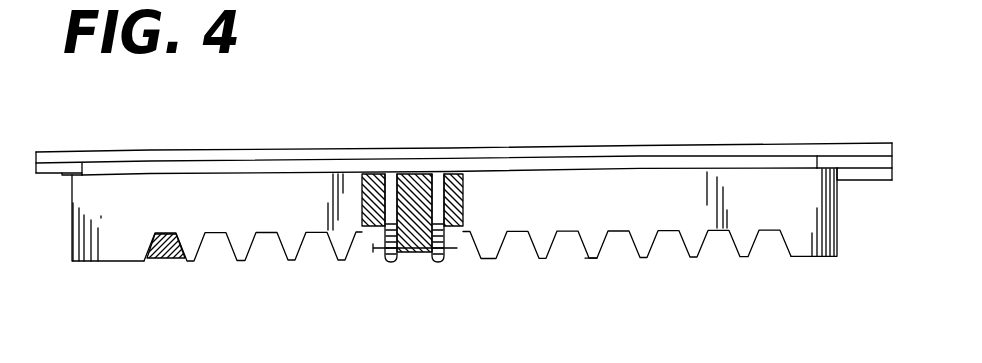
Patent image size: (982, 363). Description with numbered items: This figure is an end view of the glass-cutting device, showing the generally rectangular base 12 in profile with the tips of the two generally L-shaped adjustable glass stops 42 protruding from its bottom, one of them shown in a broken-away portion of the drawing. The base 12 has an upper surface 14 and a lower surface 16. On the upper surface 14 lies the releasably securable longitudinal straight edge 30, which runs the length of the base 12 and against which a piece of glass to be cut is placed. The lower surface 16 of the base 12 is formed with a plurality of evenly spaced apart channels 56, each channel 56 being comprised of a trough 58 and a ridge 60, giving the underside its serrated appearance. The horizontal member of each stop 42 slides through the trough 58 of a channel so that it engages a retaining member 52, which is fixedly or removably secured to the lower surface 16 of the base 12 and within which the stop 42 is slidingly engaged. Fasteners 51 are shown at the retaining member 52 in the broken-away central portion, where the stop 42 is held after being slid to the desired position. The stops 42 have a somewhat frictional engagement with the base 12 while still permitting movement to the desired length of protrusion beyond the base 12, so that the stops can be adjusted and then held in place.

The base 12 is at (800, 240).
The upper surface 14 is at (223, 172).
The lower surface 16 is at (102, 263).
The straight edge 30 is at (617, 102).
The stop 42 is at (163, 208).
The bolt 51 is at (392, 258).
The retaining member 52 is at (408, 258).
The channel 56 is at (265, 257).
The trough 58 is at (563, 232).
The ridge 60 is at (590, 258).